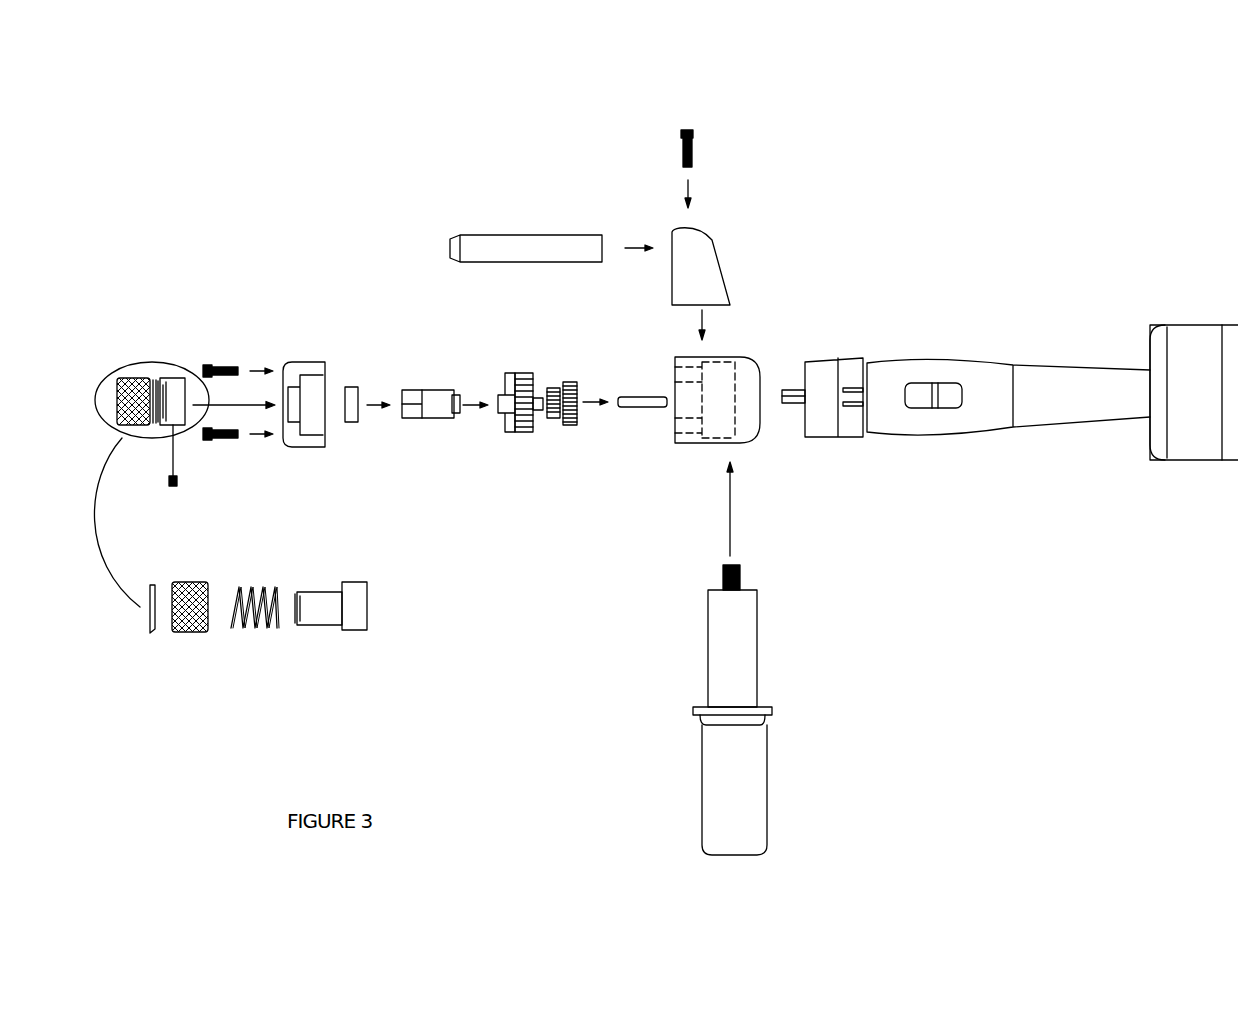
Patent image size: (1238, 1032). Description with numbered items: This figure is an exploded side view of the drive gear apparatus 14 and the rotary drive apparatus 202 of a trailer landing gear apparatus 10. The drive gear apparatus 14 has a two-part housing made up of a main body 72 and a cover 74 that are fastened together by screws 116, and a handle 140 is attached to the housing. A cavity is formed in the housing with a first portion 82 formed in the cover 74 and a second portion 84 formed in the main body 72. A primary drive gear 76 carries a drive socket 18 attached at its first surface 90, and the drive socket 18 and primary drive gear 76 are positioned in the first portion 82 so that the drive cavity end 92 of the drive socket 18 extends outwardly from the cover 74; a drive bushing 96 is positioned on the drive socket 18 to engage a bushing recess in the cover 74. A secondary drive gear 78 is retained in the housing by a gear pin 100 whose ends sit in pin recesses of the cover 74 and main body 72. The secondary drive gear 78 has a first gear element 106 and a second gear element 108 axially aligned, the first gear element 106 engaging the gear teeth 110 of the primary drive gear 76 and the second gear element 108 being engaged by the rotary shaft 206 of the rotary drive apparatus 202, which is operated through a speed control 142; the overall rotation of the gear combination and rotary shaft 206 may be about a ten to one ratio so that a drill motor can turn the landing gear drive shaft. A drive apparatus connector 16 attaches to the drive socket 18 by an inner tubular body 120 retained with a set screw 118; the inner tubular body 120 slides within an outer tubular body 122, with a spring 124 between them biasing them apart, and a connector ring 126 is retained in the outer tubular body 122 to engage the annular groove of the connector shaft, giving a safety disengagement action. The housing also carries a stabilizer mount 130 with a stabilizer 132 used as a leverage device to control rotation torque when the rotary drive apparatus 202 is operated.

The trailer landing gear apparatus 10 is at (990, 110).
The drive gear apparatus 14 is at (515, 635).
The drive apparatus connector 16 is at (129, 346).
The drive socket 18 is at (430, 390).
The main body 72 is at (747, 357).
The cover 74 is at (310, 362).
The primary drive gear 76 is at (505, 432).
The secondary drive gear 78 is at (553, 419).
The first portion 82 is at (317, 426).
The second portion 84 is at (680, 410).
The first surface 90 is at (503, 373).
The drive cavity end 92 is at (402, 410).
The drive bushing 96 is at (353, 387).
The gear pin 100 is at (643, 397).
The first gear element 106 is at (553, 388).
The second gear element 108 is at (570, 426).
The gear teeth 110 is at (523, 373).
The screws 116 is at (233, 364).
The set screw 118 is at (172, 487).
The inner tubular body 120 is at (183, 422).
The outer tubular body 122 is at (140, 424).
The spring 124 is at (153, 381).
The connector ring 126 is at (152, 633).
The stabilizer mount 130 is at (700, 252).
The stabilizer 132 is at (525, 245).
The handle 140 is at (702, 785).
The speed control 142 is at (938, 385).
The rotary drive apparatus 202 is at (822, 437).
The rotary shaft 206 is at (793, 390).